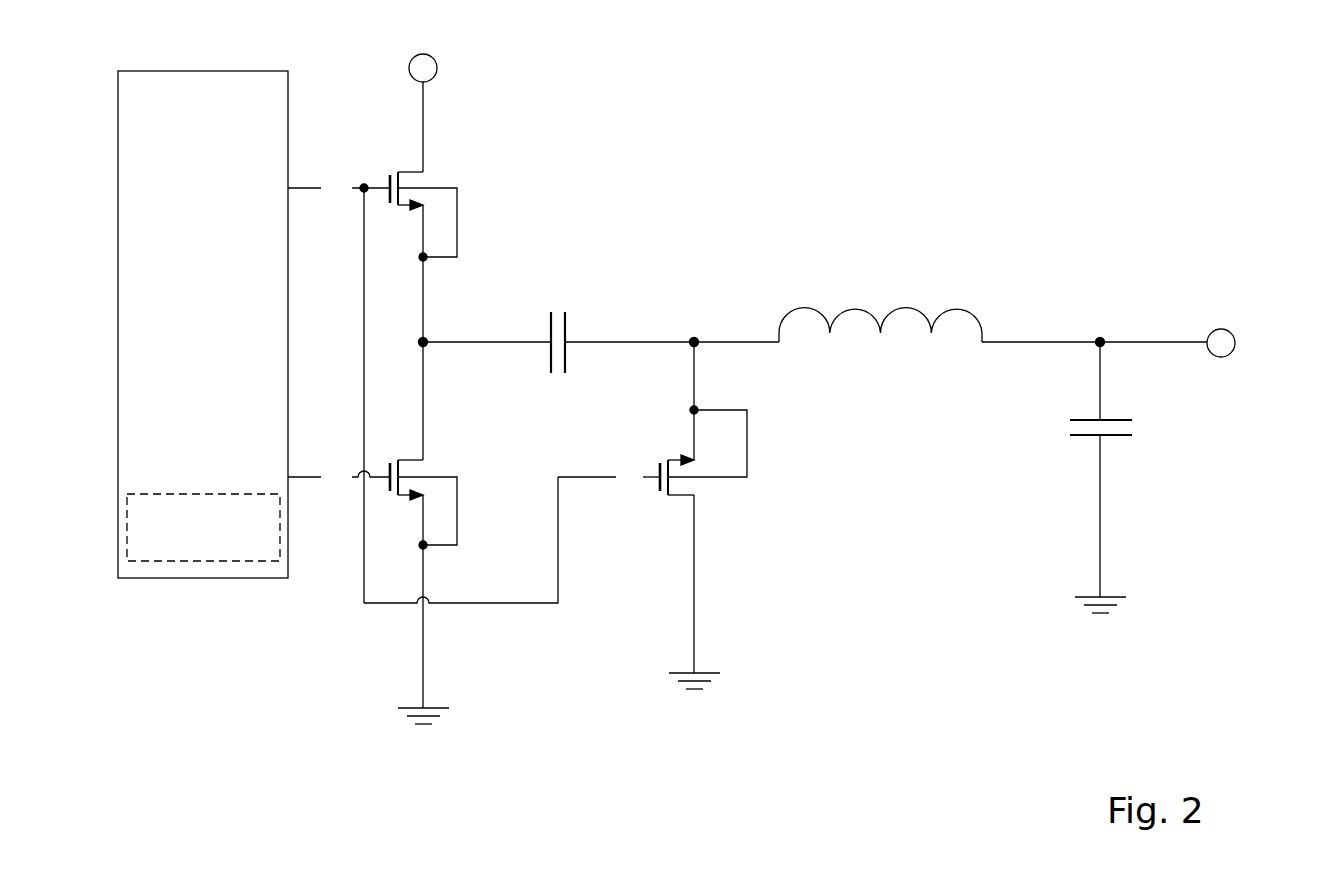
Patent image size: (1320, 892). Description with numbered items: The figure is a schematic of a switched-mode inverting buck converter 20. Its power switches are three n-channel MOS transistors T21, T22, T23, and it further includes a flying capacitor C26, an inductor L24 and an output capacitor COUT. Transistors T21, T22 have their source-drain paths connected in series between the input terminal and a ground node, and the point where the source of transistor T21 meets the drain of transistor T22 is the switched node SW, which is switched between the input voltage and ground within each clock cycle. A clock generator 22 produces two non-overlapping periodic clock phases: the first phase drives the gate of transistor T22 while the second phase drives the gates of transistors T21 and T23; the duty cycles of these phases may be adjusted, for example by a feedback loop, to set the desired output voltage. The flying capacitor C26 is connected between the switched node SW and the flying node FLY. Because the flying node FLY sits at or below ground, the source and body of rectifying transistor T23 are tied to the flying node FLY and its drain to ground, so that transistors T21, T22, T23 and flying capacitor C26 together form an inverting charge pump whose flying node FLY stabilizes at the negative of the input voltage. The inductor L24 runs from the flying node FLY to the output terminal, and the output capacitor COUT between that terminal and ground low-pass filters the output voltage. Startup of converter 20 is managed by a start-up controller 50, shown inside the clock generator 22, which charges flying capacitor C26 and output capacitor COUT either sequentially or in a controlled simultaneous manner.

The inverting buck converter 20 is at (797, 389).
The clock generator 22 is at (189, 394).
The start-up controller 50 is at (203, 510).
The n-channel MOS transistor T21 is at (422, 201).
The n-channel MOS transistor T22 is at (415, 486).
The rectifying n-channel MOS transistor T23 is at (685, 473).
The flying capacitor C26 is at (501, 347).
The inductor L24 is at (947, 305).
The output capacitor COUT is at (1174, 477).
The switched node SW is at (501, 309).
The flying node FLY is at (718, 272).